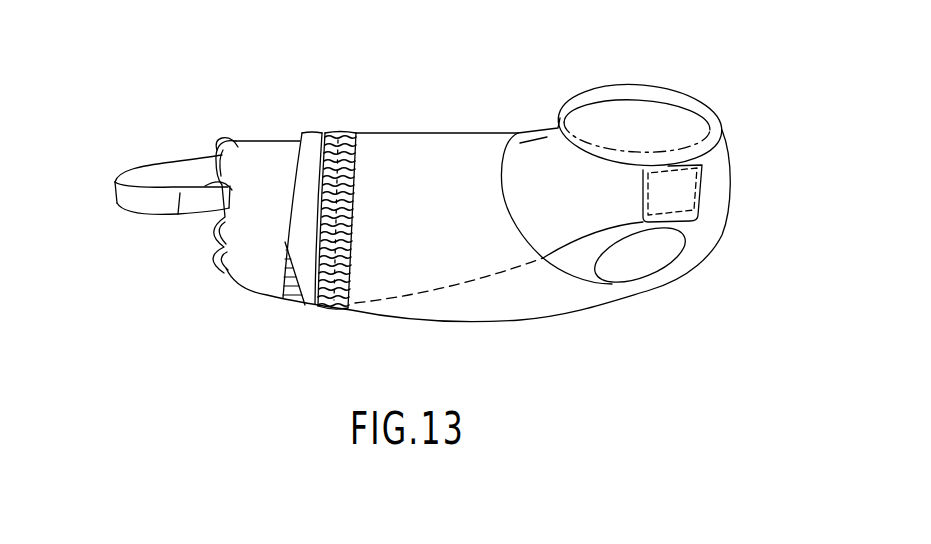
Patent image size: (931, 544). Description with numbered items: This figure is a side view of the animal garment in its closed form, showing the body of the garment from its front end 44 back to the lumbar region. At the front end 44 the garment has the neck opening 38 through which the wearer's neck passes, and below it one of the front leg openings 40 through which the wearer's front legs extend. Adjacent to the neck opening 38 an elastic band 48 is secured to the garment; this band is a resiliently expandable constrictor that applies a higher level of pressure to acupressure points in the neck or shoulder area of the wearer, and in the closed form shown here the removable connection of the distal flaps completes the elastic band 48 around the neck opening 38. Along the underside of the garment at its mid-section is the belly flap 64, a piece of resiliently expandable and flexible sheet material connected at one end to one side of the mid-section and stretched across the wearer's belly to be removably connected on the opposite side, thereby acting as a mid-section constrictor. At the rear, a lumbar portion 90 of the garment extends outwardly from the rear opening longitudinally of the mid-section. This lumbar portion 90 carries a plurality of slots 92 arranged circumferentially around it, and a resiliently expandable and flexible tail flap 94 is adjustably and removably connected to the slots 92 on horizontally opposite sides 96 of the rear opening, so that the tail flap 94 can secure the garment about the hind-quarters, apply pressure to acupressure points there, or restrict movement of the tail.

The neck opening 38 is at (648, 132).
The front leg openings 40 is at (570, 260).
The front end 44 is at (738, 180).
The elastic band 48 is at (348, 132).
The belly flap 64 is at (475, 305).
The lumbar portion 90 is at (257, 270).
The slots 92 is at (233, 148).
The tail flap 94 is at (137, 177).
The horizontally opposite sides 96 is at (253, 317).